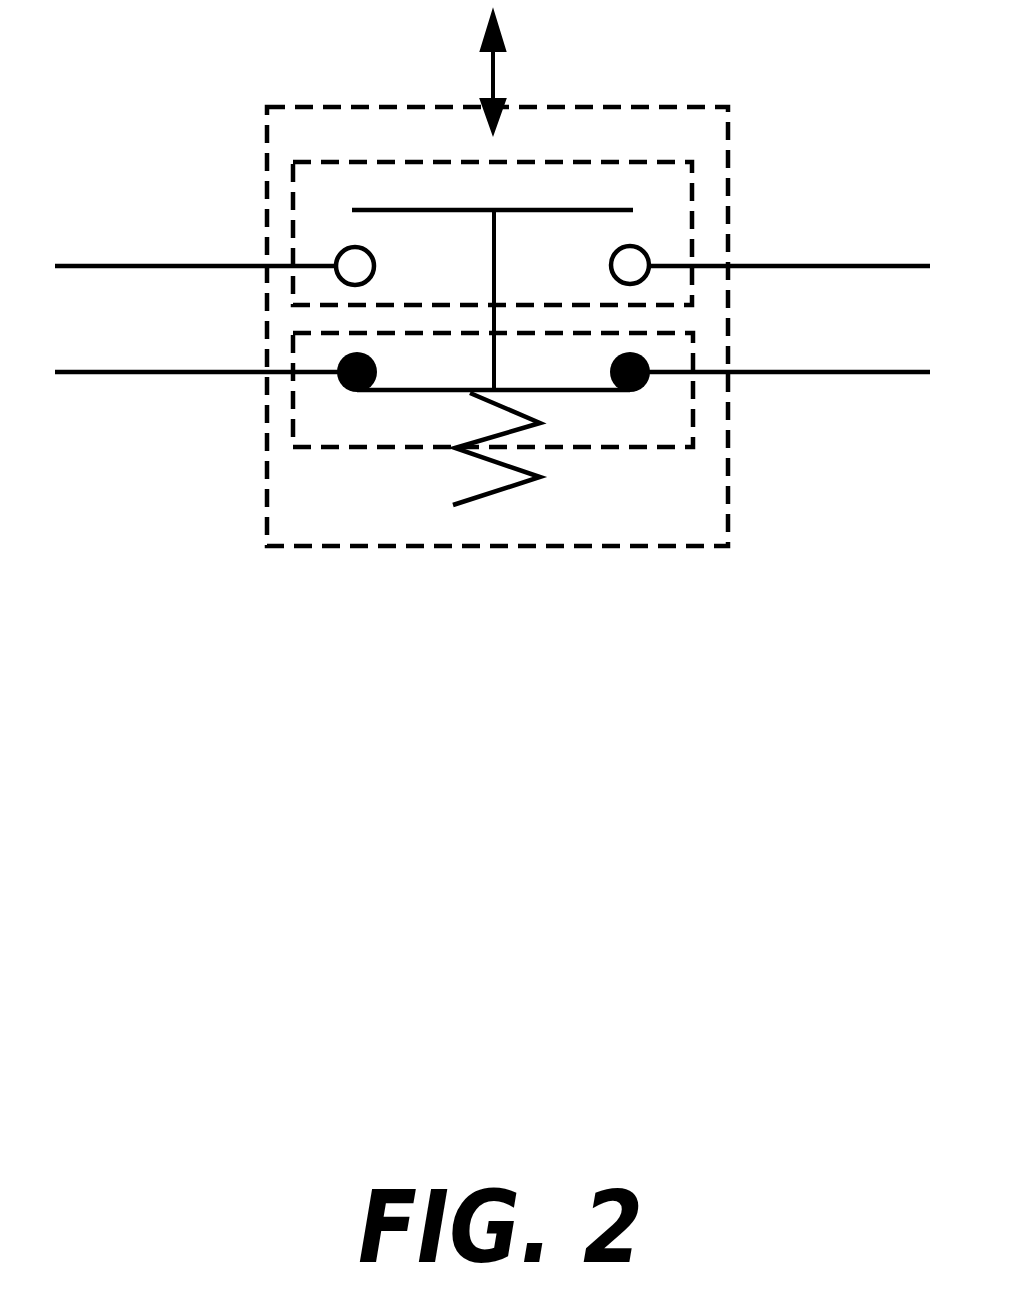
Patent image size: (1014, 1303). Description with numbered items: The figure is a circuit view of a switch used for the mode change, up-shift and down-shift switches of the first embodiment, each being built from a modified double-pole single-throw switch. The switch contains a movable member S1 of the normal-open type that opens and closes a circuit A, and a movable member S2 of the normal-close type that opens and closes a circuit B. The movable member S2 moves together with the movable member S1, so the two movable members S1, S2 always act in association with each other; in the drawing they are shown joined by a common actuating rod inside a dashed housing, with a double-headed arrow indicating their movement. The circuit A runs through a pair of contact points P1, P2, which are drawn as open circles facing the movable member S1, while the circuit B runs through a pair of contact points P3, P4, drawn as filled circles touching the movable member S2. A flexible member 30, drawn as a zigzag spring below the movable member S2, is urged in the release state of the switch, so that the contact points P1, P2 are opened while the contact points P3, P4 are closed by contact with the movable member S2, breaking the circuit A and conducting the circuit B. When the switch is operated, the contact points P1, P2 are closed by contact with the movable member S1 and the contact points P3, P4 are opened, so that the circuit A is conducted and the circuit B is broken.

The circuit A is at (127, 263).
The circuit B is at (133, 377).
The contact point P1 is at (340, 250).
The contact point P2 is at (637, 244).
The contact point P3 is at (347, 392).
The contact point P4 is at (643, 390).
The movable member S1 is at (597, 210).
The movable member S2 is at (583, 393).
The flexible member 30 is at (500, 495).